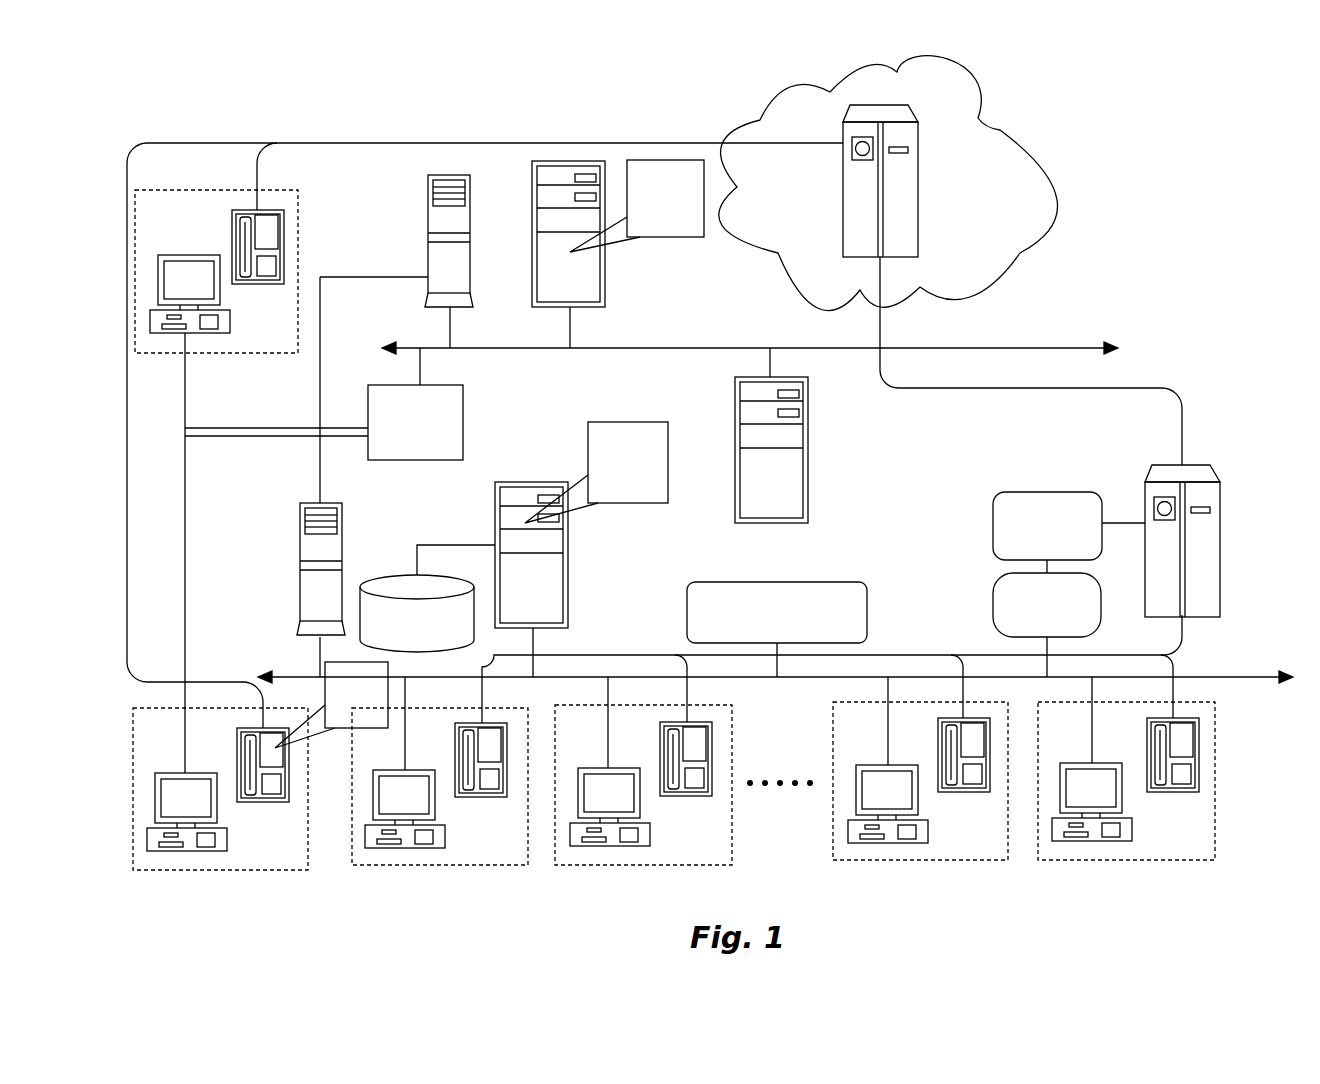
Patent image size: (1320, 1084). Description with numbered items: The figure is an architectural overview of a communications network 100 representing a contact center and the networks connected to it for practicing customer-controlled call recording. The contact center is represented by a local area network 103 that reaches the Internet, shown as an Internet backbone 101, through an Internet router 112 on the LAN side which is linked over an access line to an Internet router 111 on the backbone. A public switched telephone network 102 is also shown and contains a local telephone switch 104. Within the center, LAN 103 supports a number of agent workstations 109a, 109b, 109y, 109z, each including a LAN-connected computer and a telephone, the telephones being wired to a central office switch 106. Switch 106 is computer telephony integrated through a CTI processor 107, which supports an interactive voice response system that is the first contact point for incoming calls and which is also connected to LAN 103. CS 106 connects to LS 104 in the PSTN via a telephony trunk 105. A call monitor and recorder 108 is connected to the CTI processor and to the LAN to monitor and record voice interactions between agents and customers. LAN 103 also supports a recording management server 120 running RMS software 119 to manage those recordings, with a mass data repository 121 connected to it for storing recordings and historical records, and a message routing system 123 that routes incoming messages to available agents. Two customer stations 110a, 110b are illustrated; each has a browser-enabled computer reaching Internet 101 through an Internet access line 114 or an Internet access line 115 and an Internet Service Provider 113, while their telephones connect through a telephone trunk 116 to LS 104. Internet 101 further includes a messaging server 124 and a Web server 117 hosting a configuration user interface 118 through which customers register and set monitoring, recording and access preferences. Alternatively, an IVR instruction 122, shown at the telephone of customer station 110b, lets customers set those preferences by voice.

The communications network 100 is at (1150, 267).
The Internet backbone 101 is at (1008, 347).
The public switched telephone network 102 is at (830, 92).
The local area network 103 is at (1225, 677).
The local telephone switch 104 is at (843, 182).
The telephony trunk 105 is at (1020, 388).
The central office switch 106 is at (1218, 525).
The CTI processor 107 is at (1047, 492).
The call monitor and recorder 108 is at (993, 612).
The agent workstation 109a is at (468, 808).
The agent workstation 109b is at (672, 808).
The agent workstation 109y is at (953, 805).
The agent workstation 109z is at (1157, 805).
The customer station 110a is at (238, 297).
The customer station 110b is at (245, 812).
The Internet router 111 is at (470, 222).
The Internet router 112 is at (300, 523).
The Internet Service Provider 113 is at (463, 432).
The Internet access line 114 is at (277, 428).
The Internet access line 115 is at (185, 500).
The telephone trunk 116 is at (423, 143).
The Web server 117 is at (605, 260).
The configuration user interface 118 is at (678, 237).
The RMS software 119 is at (668, 452).
The recording management server 120 is at (568, 557).
The mass data repository 121 is at (377, 573).
The IVR instruction 122 is at (323, 698).
The message routing system 123 is at (773, 582).
The messaging server 124 is at (810, 437).